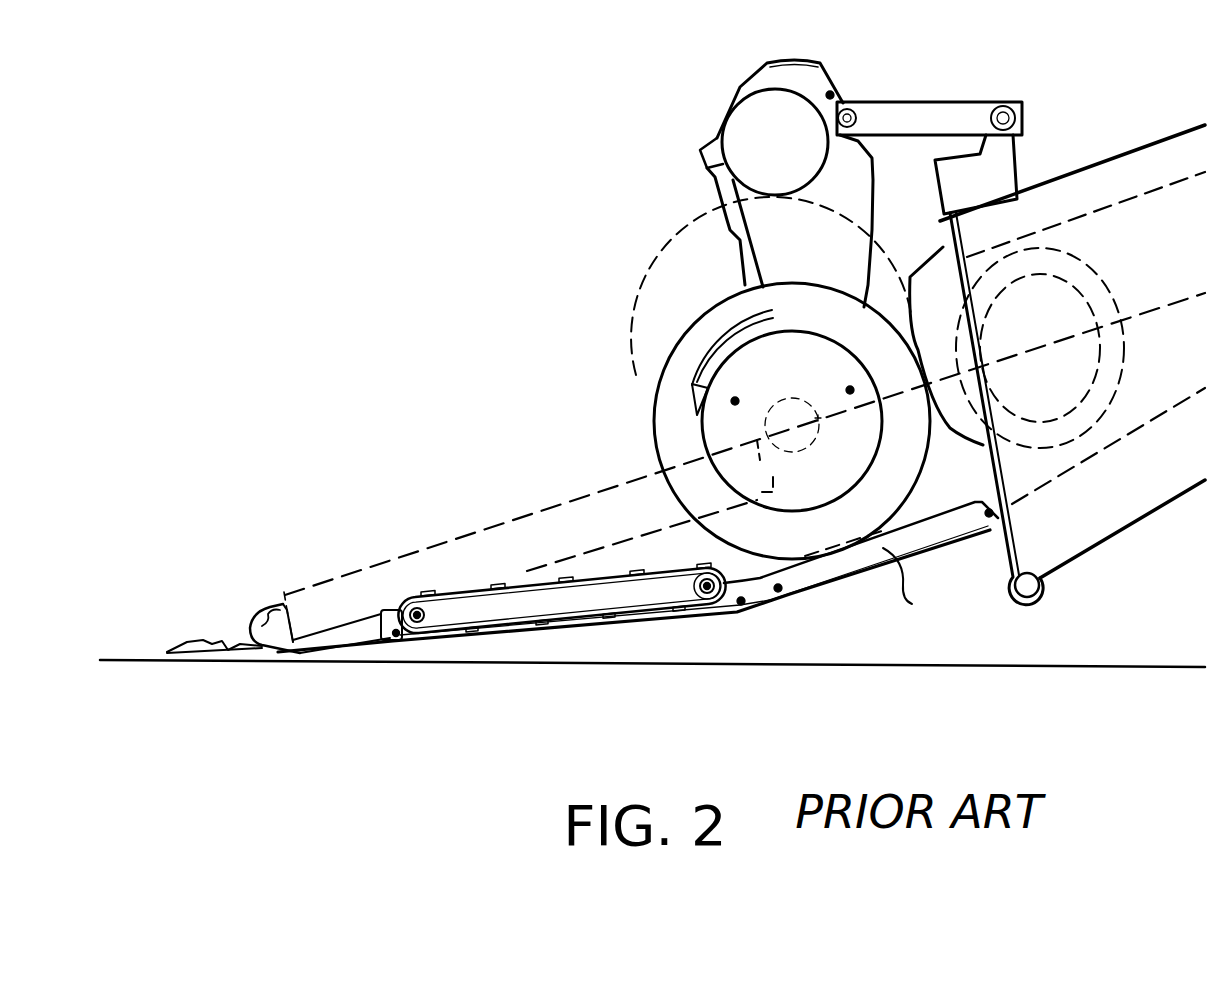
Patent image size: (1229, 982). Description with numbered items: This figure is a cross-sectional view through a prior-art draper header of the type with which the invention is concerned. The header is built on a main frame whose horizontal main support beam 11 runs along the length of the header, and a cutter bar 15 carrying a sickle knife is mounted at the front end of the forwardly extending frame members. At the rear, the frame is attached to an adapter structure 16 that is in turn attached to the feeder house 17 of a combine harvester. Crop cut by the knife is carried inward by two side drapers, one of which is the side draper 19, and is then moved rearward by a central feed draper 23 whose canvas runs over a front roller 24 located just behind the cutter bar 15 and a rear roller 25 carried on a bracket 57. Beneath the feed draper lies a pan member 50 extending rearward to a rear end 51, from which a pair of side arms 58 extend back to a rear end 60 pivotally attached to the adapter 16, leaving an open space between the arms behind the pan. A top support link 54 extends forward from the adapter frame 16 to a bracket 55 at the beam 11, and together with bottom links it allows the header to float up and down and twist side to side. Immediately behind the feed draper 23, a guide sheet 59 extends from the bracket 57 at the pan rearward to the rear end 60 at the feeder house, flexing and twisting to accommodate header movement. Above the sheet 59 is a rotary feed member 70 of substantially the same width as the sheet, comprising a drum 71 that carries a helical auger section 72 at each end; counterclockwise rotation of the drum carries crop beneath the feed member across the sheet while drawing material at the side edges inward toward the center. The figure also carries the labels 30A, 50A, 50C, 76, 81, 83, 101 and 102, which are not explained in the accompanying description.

The main support beam 11 is at (731, 102).
The cutter bar 15 is at (249, 613).
The adapter structure 16 is at (1002, 177).
The feeder house 17 is at (1142, 165).
The side draper 19 is at (566, 495).
The feed draper 23 is at (522, 566).
The front roller 24 is at (416, 613).
The rear roller 25 is at (706, 600).
The wheel hub 30A is at (735, 401).
The pan member 50 is at (577, 638).
The cutting blade 50A is at (286, 651).
The lower frame member 50C is at (472, 655).
The rear end 51 is at (744, 604).
The top support link 54 is at (923, 115).
The bracket 55 is at (831, 94).
The bracket 57 is at (712, 602).
The side arms 58 is at (913, 596).
The guide sheet 59 is at (778, 588).
The rear end 60 is at (989, 513).
The rotary feed member 70 is at (717, 320).
The drum 71 is at (699, 423).
The helical auger section 72 is at (697, 363).
The wheel pin 76 is at (850, 390).
The support bar 81 is at (711, 177).
The cavity 83 is at (767, 268).
The pivot bar 101 is at (298, 578).
The pivot pin 102 is at (397, 636).